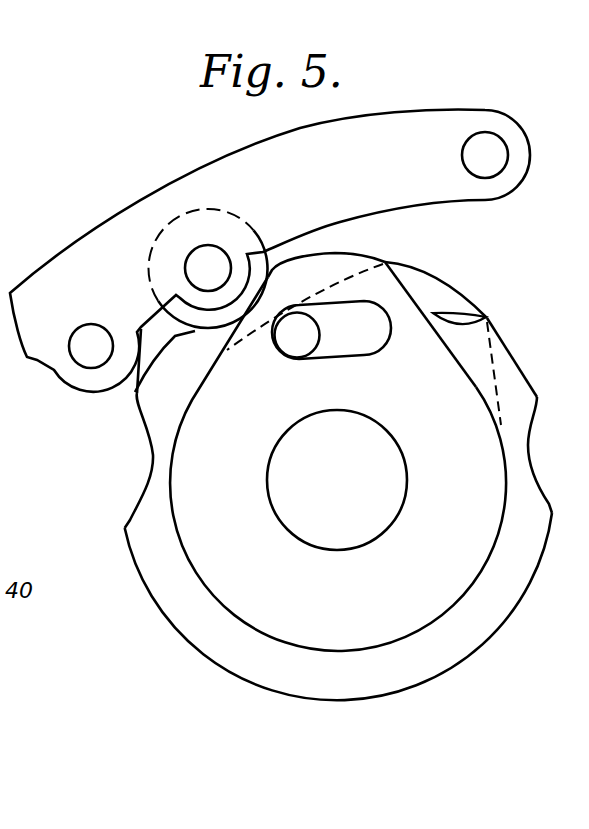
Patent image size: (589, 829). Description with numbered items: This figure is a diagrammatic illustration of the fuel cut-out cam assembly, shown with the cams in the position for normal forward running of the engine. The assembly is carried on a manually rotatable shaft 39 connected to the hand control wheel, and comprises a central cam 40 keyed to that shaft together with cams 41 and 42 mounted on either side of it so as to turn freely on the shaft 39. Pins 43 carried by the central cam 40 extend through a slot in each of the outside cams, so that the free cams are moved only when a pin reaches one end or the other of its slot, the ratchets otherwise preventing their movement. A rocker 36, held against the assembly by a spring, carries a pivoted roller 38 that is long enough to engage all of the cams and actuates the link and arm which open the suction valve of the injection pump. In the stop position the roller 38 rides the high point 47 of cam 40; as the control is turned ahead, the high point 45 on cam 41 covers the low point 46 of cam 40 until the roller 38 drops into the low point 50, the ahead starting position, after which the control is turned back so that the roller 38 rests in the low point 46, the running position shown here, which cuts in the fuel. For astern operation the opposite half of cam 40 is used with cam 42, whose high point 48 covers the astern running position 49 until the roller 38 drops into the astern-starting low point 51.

The rocker 36 is at (105, 240).
The roller 38 is at (157, 320).
The manually rotatable shaft 39 is at (303, 508).
The central cam 40 is at (468, 353).
The cam 41 is at (258, 592).
The cam 42 is at (433, 302).
The pins 43 is at (303, 343).
The high point 45 is at (325, 260).
The low point 46 is at (185, 337).
The high point 47 is at (386, 261).
The high point 48 is at (447, 280).
The astern running position 49 is at (487, 314).
The low point 50 is at (137, 420).
The low point 51 is at (528, 444).